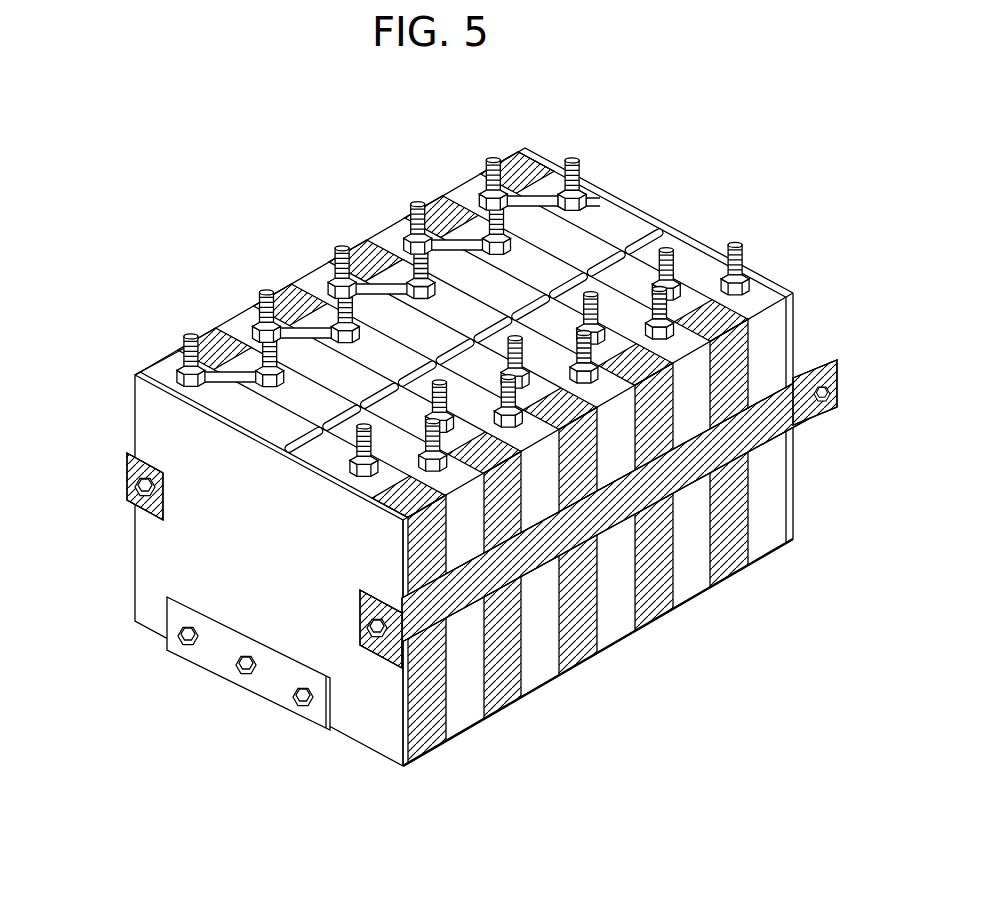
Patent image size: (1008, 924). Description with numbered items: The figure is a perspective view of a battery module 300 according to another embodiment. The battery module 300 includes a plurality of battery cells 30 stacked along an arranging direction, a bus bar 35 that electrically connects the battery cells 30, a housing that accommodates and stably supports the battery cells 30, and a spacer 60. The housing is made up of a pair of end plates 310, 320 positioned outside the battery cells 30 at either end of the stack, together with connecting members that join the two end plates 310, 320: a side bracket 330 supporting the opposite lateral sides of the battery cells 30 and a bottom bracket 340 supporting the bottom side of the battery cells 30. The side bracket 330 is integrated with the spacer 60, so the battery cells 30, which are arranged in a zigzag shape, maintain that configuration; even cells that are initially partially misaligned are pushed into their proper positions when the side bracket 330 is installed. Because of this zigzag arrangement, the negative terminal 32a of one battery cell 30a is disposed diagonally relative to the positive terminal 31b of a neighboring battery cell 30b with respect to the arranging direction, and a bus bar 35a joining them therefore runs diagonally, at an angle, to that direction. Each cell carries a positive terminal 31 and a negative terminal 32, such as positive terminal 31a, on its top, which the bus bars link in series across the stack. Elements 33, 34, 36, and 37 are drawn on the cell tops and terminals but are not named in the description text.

The battery module 300 is at (152, 197).
The battery cell 30 is at (775, 492).
The one battery cell 30a is at (165, 368).
The neighboring battery cell 30b is at (460, 745).
The positive terminal 31 is at (578, 152).
The positive terminal 31a is at (352, 466).
The positive terminal of neighboring battery cell 31b is at (262, 345).
The negative terminal 32 is at (752, 252).
The negative terminal of one battery cell 32a is at (190, 332).
The cap plate 33 is at (648, 255).
The vent member 34 is at (700, 262).
The bus bar 35 is at (533, 180).
The bus bar 35a is at (215, 374).
The nut 36 is at (590, 182).
The washer 37 is at (603, 204).
The spacer 60 is at (423, 752).
The end plate 310 is at (155, 571).
The end plate 320 is at (800, 460).
The side bracket 330 is at (125, 490).
The bottom bracket 340 is at (222, 660).